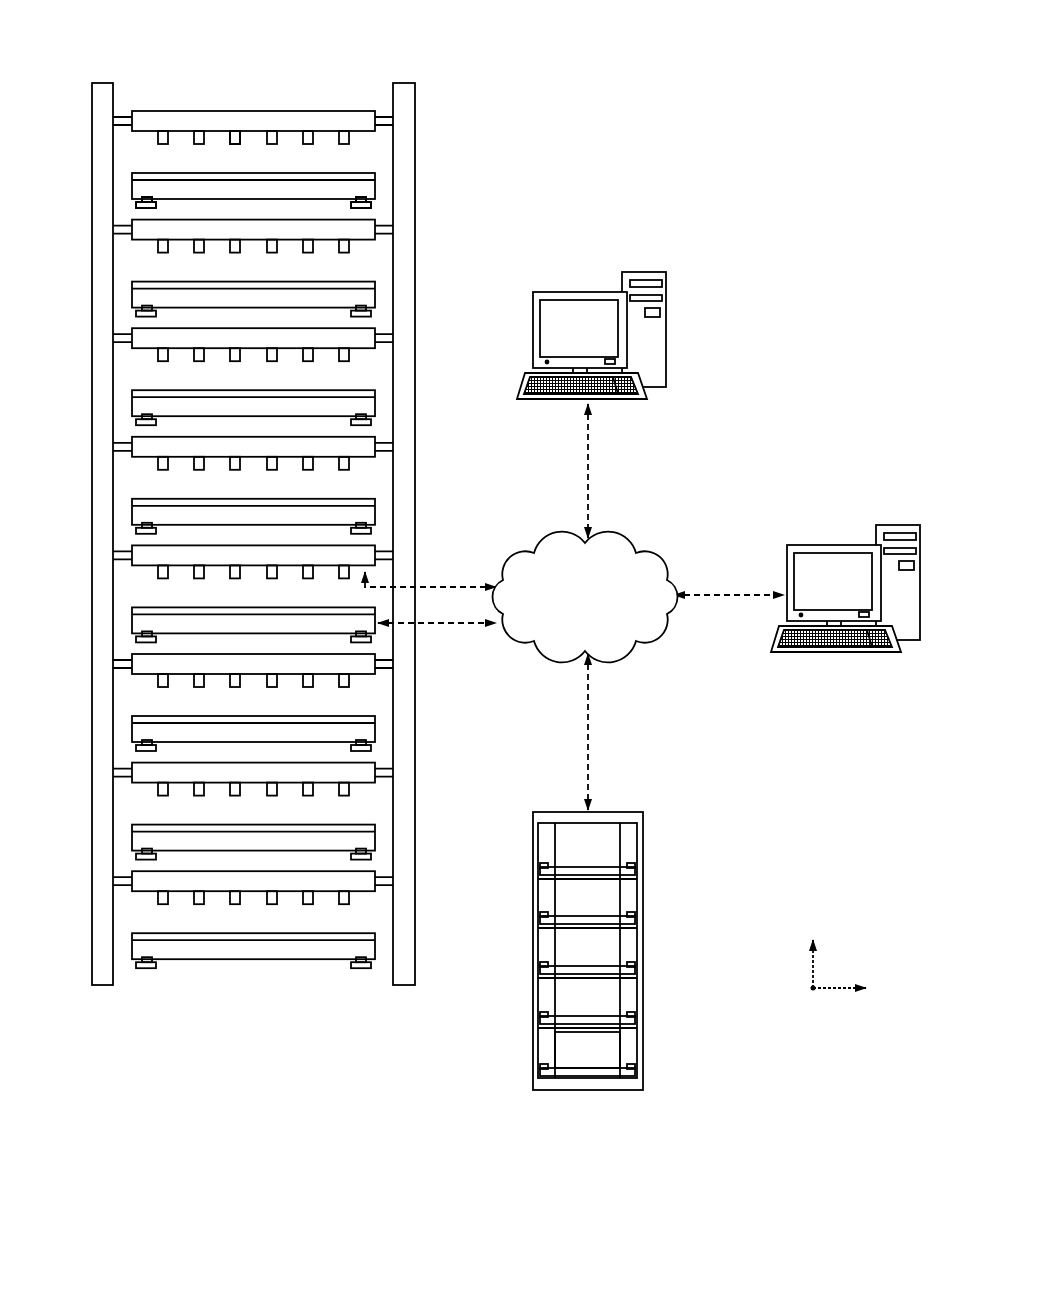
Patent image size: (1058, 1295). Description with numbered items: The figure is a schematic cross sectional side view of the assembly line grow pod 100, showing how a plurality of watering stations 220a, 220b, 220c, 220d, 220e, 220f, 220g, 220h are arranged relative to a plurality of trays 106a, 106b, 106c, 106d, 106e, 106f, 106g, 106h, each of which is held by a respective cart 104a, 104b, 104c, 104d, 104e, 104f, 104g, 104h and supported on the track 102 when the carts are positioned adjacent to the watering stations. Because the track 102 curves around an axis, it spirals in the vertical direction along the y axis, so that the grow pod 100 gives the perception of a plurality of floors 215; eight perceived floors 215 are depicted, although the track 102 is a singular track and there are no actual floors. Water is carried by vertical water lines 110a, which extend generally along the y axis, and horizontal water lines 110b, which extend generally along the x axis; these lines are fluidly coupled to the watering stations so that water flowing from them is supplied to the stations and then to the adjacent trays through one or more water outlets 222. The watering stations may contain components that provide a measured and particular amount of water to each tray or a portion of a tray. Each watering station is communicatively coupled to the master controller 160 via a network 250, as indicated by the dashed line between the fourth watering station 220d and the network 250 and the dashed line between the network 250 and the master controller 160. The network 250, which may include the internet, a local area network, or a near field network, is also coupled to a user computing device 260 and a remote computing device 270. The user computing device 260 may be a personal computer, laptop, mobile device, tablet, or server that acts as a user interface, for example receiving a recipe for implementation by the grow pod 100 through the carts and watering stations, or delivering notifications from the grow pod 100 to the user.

The assembly line grow pod 100 is at (677, 97).
The track 102 is at (147, 204).
The cart 104h is at (132, 196).
The cart 104g is at (201, 297).
The cart 104f is at (201, 405).
The cart 104e is at (201, 514).
The cart 104d is at (201, 622).
The cart 104c is at (201, 731).
The cart 104b is at (201, 840).
The cart 104a is at (201, 948).
The tray 106h is at (132, 174).
The tray 106g is at (203, 248).
The tray 106f is at (203, 356).
The tray 106e is at (203, 465).
The tray 106d is at (203, 573).
The tray 106c is at (203, 682).
The tray 106b is at (203, 791).
The tray 106a is at (203, 899).
The vertical water line 110a is at (100, 83).
The horizontal water line 110b is at (122, 116).
The master controller 160 is at (643, 865).
The perceived floor 215 is at (437, 152).
The watering station 220h is at (383, 121).
The watering station 220g is at (434, 226).
The watering station 220f is at (431, 334).
The watering station 220e is at (434, 443).
The fourth watering station 220d is at (434, 551).
The watering station 220c is at (433, 660).
The watering station 220b is at (434, 769).
The watering station 220a is at (434, 877).
The water outlet 222 is at (238, 143).
The network 250 is at (635, 541).
The user computing device 260 is at (578, 292).
The remote computing device 270 is at (832, 545).